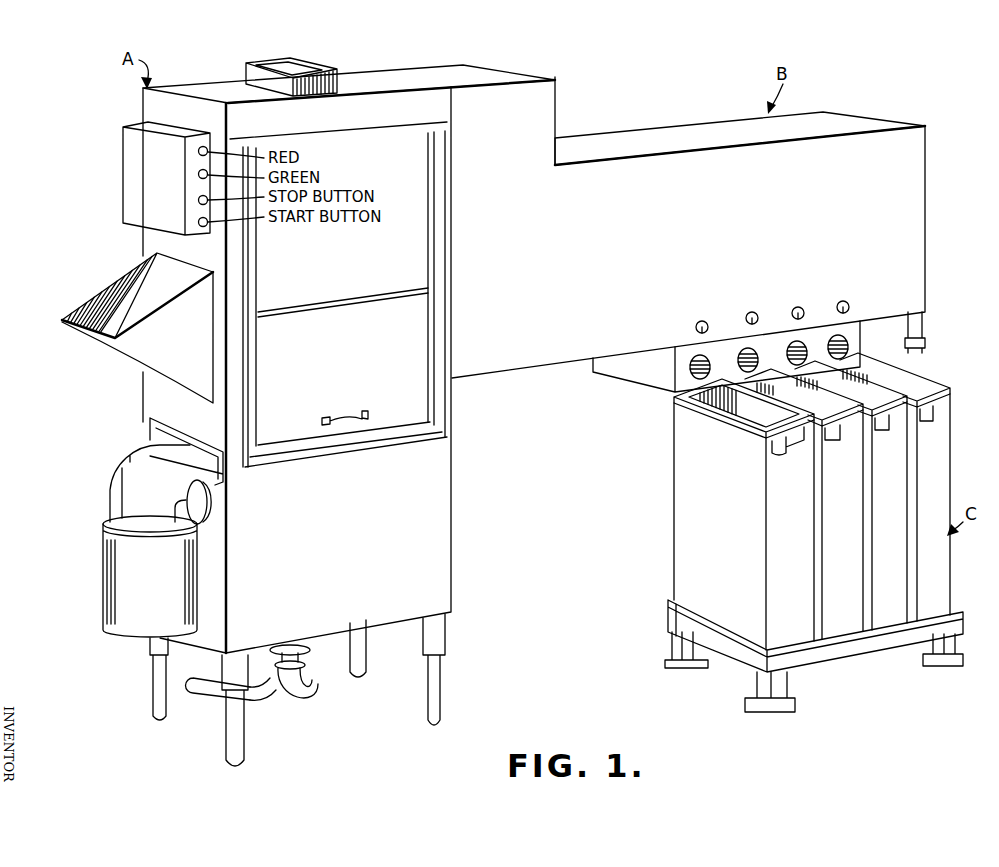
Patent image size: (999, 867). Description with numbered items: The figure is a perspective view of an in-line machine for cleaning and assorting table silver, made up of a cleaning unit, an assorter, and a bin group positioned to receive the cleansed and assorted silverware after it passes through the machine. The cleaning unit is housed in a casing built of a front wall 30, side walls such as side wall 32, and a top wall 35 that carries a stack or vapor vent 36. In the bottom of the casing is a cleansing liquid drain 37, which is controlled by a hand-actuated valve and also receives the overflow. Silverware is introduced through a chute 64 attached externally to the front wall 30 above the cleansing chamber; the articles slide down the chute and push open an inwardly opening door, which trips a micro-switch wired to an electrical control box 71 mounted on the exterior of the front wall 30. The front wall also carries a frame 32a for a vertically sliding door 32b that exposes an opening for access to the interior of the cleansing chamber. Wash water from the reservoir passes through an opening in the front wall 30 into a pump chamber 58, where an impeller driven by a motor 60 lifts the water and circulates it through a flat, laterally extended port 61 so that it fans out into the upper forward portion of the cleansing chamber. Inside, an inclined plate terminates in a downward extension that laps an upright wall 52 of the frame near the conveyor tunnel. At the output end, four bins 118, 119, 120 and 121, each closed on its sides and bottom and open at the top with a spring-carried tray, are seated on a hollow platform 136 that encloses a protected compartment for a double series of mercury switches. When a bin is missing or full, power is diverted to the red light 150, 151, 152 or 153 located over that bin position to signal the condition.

The front wall 30 is at (221, 581).
The side wall 32 is at (349, 547).
The frame 32a is at (442, 252).
The vertically sliding door 32b is at (304, 318).
The top wall 35 is at (362, 80).
The stack or vapor vent 36 is at (286, 62).
The cleansing liquid drain 37 is at (302, 683).
The upright wall 52 is at (200, 503).
The pump chamber 58 is at (127, 487).
The motor 60 is at (133, 580).
The port 61 is at (183, 451).
The chute 64 is at (190, 342).
The electrical control box 71 is at (123, 190).
The bin 118 is at (692, 471).
The bin 119 is at (852, 545).
The bin 120 is at (900, 537).
The bin 121 is at (943, 535).
The platform 136 is at (865, 654).
The red light 150 is at (702, 321).
The red light 151 is at (752, 312).
The red light 152 is at (798, 307).
The red light 153 is at (846, 302).